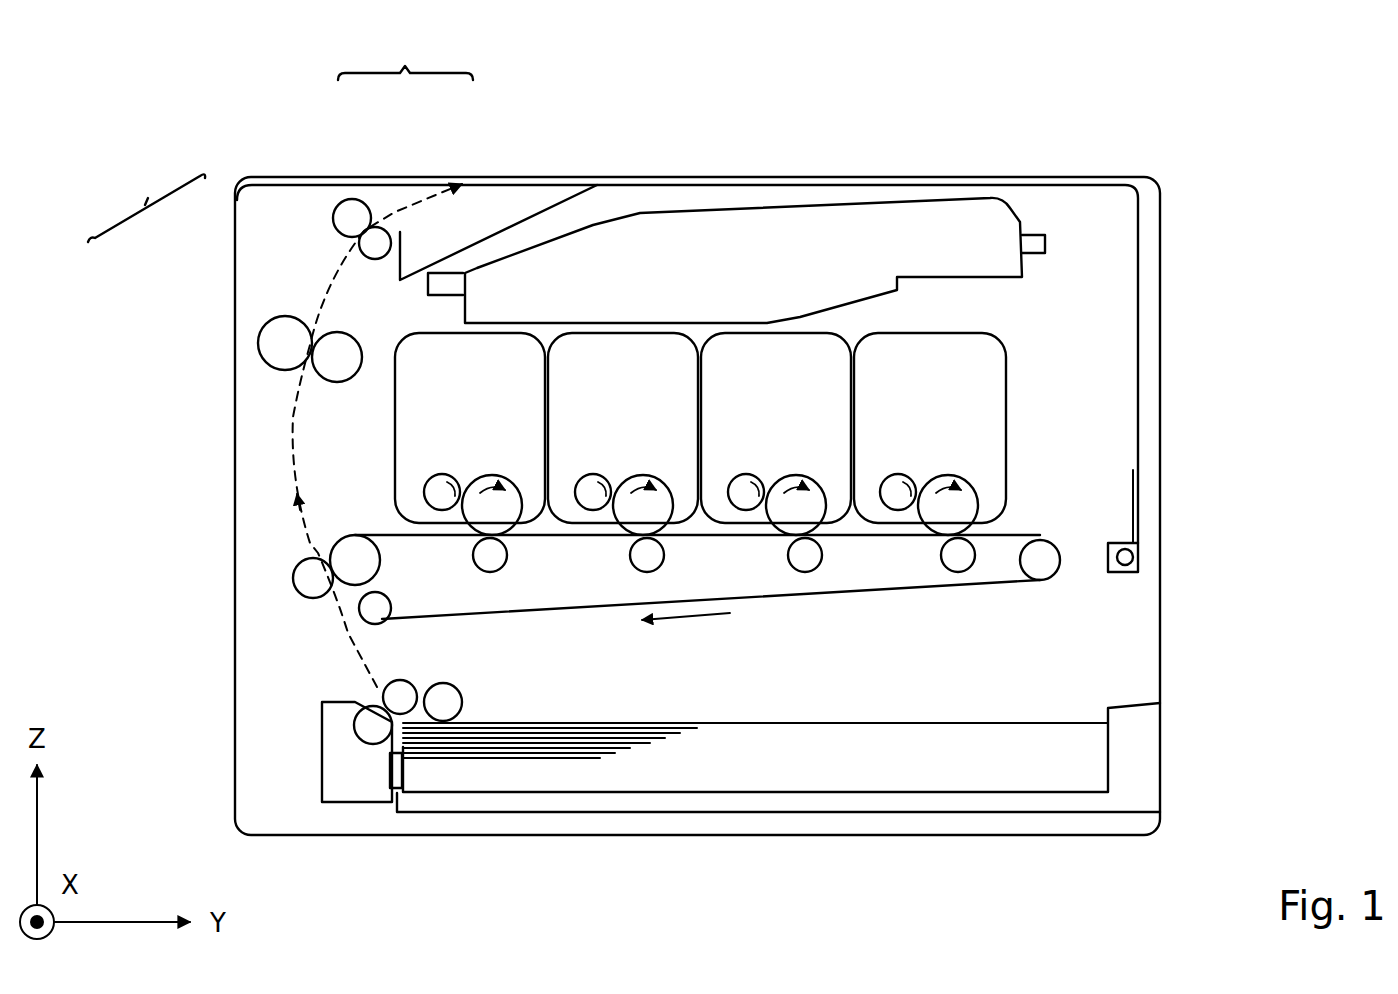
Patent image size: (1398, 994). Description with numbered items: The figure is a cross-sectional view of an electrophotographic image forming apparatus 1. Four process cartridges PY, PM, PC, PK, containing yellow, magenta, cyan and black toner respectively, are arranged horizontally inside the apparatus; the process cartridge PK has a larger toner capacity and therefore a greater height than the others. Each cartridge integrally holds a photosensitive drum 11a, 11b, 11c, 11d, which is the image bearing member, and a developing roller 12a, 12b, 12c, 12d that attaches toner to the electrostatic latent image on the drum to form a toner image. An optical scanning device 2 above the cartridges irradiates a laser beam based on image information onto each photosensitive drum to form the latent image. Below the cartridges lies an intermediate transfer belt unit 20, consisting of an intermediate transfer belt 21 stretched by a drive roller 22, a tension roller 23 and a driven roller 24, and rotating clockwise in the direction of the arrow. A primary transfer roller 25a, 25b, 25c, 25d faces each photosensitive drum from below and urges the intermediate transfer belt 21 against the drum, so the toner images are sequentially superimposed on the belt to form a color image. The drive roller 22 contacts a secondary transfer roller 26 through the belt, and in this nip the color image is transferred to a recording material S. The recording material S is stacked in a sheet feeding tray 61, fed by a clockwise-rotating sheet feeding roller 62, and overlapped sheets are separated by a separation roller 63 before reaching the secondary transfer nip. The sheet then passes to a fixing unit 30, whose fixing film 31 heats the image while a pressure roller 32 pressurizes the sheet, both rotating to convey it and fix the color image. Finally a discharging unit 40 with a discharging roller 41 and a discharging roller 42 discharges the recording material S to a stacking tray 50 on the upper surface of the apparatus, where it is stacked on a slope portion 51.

The image forming apparatus 1 is at (1122, 150).
The optical scanning device 2 is at (703, 235).
The stacking tray 50 is at (868, 185).
The slope portion 51 is at (532, 233).
The discharging unit 40 is at (405, 57).
The discharging roller 41 is at (353, 198).
The discharging roller 42 is at (380, 228).
The fixing unit 30 is at (146, 197).
The fixing film 31 is at (318, 330).
The pressure roller 32 is at (262, 333).
The process cartridge PY is at (470, 357).
The process cartridge PM is at (610, 367).
The process cartridge PC is at (763, 367).
The process cartridge PK is at (920, 367).
The photosensitive drum 11a is at (492, 505).
The photosensitive drum 11b is at (643, 505).
The photosensitive drum 11c is at (796, 505).
The photosensitive drum 11d is at (948, 505).
The developing roller 12a is at (438, 476).
The developing roller 12b is at (589, 476).
The developing roller 12c is at (742, 476).
The developing roller 12d is at (896, 476).
The intermediate transfer belt unit 20 is at (950, 602).
The intermediate transfer belt 21 is at (778, 606).
The drive roller 22 is at (353, 538).
The tension roller 23 is at (363, 616).
The driven roller 24 is at (1046, 573).
The primary transfer roller 25a is at (478, 564).
The primary transfer roller 25b is at (634, 564).
The primary transfer roller 25c is at (792, 562).
The primary transfer roller 25d is at (945, 561).
The secondary transfer roller 26 is at (304, 586).
The sheet feeding tray 61 is at (1134, 765).
The sheet feeding roller 62 is at (458, 689).
The separation roller 63 is at (414, 685).
The recording material S is at (773, 750).